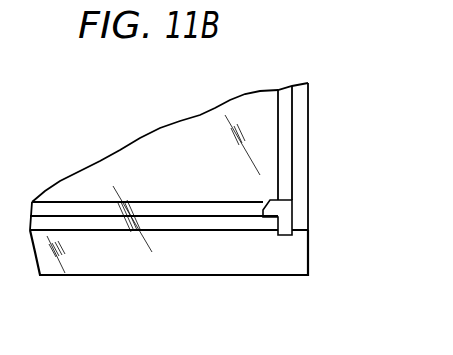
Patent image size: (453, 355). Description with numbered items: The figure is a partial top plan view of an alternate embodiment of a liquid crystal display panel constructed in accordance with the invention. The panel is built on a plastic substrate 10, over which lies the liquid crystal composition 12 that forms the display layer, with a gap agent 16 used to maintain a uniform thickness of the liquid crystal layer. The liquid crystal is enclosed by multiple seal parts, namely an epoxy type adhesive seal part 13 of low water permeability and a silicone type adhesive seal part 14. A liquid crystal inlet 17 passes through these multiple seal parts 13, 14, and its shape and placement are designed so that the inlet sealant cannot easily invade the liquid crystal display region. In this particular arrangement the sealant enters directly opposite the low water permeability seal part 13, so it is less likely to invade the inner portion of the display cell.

The plastic substrate 10 is at (297, 260).
The liquid crystal composition 12 is at (190, 193).
The epoxy type adhesive seal part 13 is at (287, 107).
The silicone type adhesive seal part 14 is at (302, 148).
The gap agent 16 is at (287, 208).
The liquid crystal inlet 17 is at (265, 199).